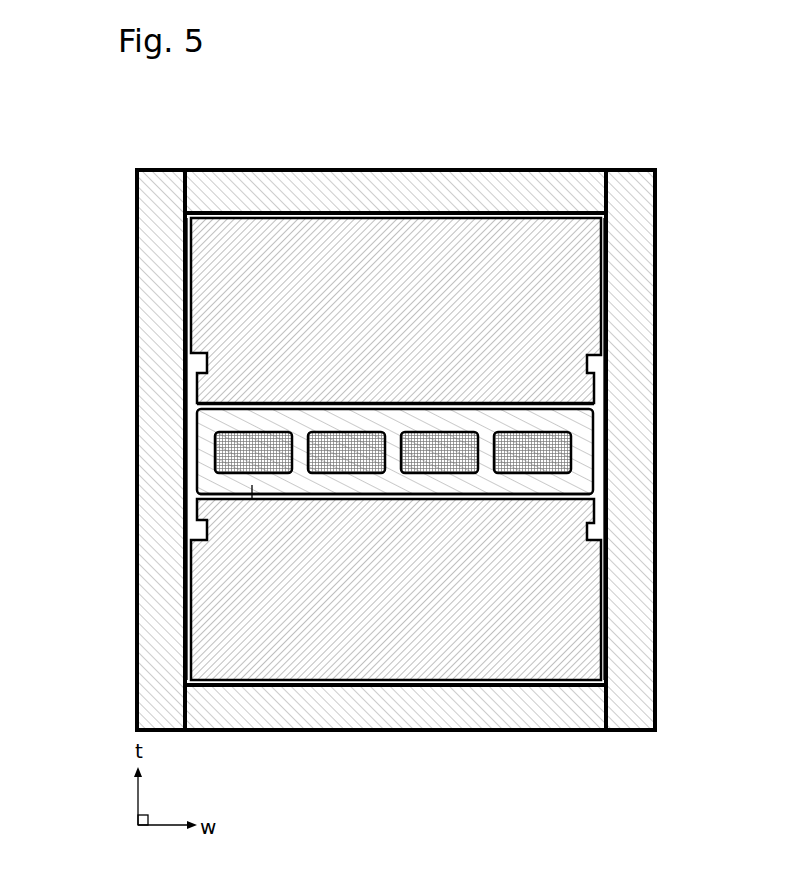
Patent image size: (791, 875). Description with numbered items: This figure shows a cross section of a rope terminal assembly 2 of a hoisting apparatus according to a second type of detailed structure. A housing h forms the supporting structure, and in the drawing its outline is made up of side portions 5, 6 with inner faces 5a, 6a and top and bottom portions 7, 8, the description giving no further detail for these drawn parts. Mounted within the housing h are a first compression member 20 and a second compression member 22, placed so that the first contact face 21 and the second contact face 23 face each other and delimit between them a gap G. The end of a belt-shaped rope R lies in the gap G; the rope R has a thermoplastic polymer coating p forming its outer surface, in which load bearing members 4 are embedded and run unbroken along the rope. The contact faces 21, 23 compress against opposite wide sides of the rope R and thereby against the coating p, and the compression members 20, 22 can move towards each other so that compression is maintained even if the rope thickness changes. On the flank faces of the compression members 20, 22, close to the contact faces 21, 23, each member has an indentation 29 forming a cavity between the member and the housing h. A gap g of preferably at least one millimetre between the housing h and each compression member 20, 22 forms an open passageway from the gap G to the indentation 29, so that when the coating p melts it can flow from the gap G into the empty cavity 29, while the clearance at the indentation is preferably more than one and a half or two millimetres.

The rope terminal assembly 2 is at (665, 80).
The housing h is at (658, 170).
The first side wall 5 is at (140, 314).
The inner surface of first side wall 5a is at (186, 458).
The second side wall 6 is at (622, 600).
The inner surface of second side wall 6a is at (608, 508).
The upper wall 7 is at (342, 204).
The lower wall 8 is at (362, 724).
The first compression member 20 is at (366, 319).
The second compression member 22 is at (366, 621).
The first contact face 21 is at (187, 409).
The second contact face 23 is at (187, 491).
The indentation 29 is at (193, 367).
The gap G is at (600, 425).
The gap g is at (193, 507).
The belt-shaped rope R is at (192, 460).
The thermoplastic polymer coating p is at (252, 487).
The load bearing member 4 is at (273, 473).